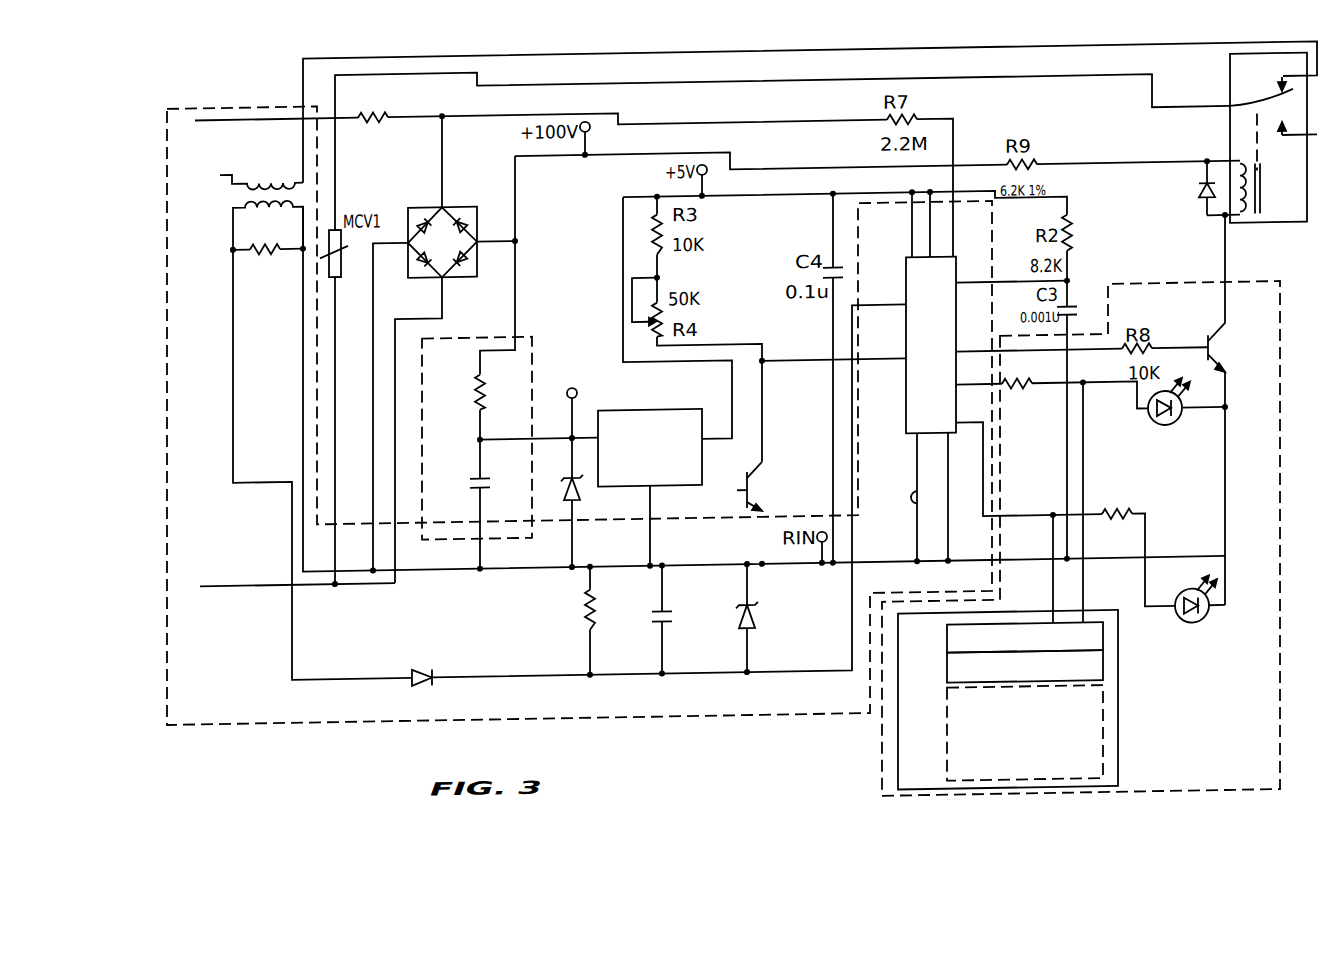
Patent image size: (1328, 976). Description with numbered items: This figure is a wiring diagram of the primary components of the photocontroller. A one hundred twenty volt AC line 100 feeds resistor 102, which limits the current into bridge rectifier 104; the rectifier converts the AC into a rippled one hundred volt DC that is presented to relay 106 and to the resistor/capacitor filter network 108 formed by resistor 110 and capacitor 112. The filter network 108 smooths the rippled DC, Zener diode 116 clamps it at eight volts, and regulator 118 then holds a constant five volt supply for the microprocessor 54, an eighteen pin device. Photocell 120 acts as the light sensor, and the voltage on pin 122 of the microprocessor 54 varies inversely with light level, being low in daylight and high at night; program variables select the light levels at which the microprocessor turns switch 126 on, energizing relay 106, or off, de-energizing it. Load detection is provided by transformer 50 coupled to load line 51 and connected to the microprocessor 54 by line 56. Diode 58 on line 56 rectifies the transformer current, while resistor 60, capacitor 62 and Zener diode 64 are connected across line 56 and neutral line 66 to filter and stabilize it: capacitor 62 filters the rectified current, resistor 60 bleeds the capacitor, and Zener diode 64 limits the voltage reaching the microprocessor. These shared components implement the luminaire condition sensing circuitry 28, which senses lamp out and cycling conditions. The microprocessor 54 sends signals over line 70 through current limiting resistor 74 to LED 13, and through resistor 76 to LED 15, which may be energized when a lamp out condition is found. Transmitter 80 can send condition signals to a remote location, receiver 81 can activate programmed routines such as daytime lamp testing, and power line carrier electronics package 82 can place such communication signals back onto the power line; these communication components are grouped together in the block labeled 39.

The AC line 100 is at (277, 111).
The load line 51 is at (220, 173).
The transformer 50 is at (243, 199).
The resistor 102 is at (385, 111).
The bridge rectifier 104 is at (407, 222).
The resistor/capacitor filter network 108 is at (455, 339).
The resistor 110 is at (488, 396).
The capacitor 112 is at (488, 481).
The Zener diode 116 is at (578, 470).
The regulator 118 is at (650, 413).
The photocell 120 is at (762, 463).
The pin 1 122 is at (904, 367).
The microprocessor 54 is at (945, 431).
The resistor 74 is at (1033, 395).
The line 70 is at (1110, 396).
The LED 13 is at (1214, 396).
The resistor 76 is at (1103, 519).
The LED 15 is at (1199, 630).
The switch 126 is at (1226, 335).
The relay 106 is at (1266, 67).
The neutral line 66 is at (393, 584).
The diode 58 is at (411, 672).
The resistor 60 is at (597, 623).
The capacitor 62 is at (672, 620).
The Zener diode 64 is at (755, 611).
The line 56 is at (800, 679).
The luminaire condition sensing circuitry 28 is at (705, 722).
The power line carrier module 39 is at (880, 770).
The transmitter 80 is at (947, 650).
The receiver 81 is at (947, 680).
The power line carrier electronics package 82 is at (947, 752).